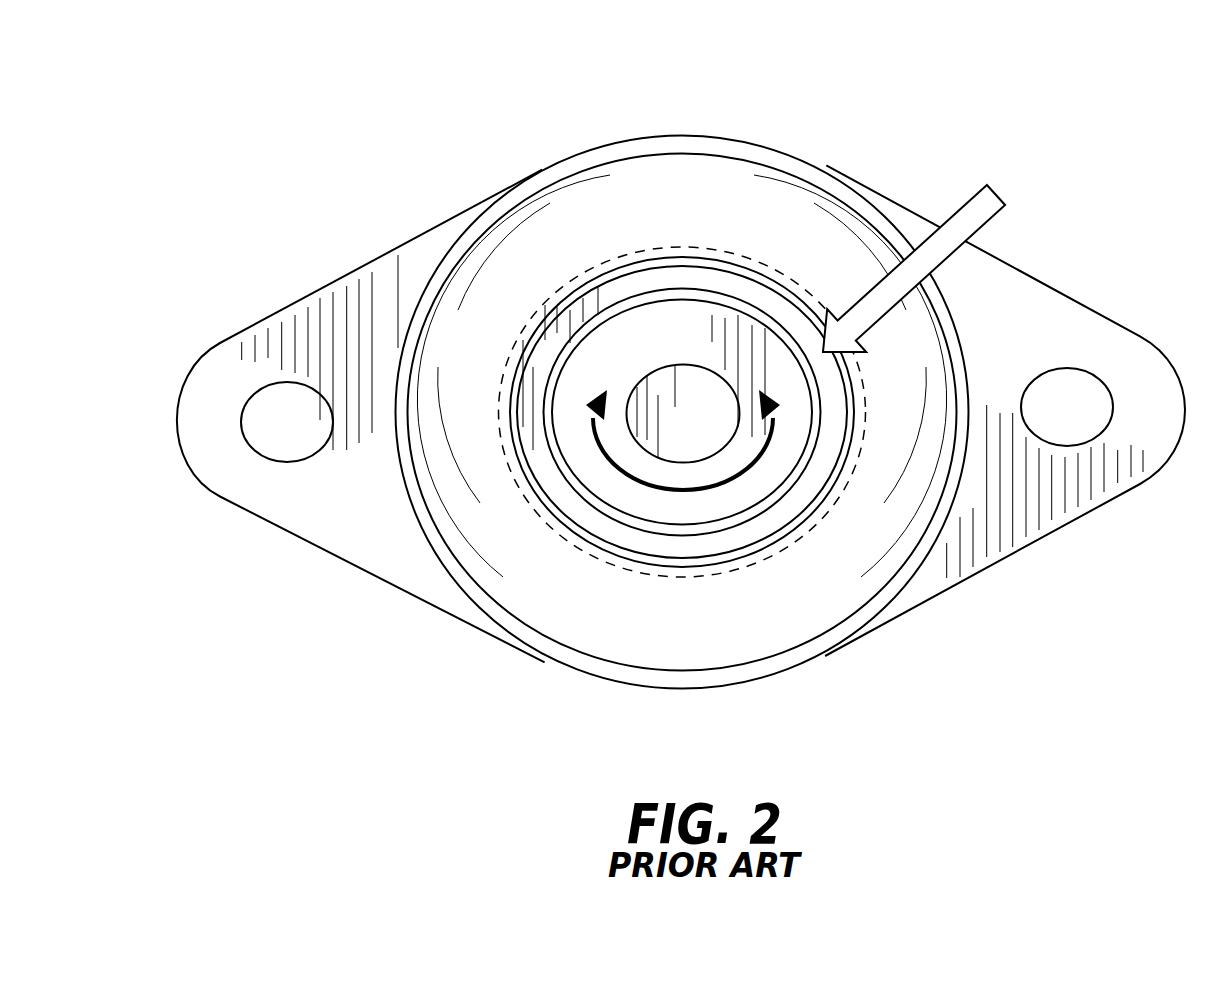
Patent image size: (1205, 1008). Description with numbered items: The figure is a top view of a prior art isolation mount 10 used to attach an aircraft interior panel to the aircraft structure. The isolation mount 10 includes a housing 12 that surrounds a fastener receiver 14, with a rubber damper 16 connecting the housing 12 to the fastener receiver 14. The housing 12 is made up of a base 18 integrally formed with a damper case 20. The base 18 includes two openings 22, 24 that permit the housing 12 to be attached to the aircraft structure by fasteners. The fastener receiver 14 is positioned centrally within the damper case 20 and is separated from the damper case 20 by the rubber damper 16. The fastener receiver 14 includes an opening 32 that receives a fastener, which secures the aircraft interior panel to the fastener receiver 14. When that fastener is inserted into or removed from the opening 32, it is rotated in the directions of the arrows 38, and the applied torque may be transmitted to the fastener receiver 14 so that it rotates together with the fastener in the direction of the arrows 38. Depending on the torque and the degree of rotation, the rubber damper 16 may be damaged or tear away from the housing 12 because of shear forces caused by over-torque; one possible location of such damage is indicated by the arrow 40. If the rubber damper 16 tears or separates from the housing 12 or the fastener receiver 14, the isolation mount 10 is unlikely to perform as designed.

The isolation mount 10 is at (652, 364).
The housing 12 is at (1068, 232).
The fastener receiver 14 is at (723, 513).
The rubber damper 16 is at (655, 273).
The base 18 is at (1031, 533).
The damper case 20 is at (687, 168).
The opening 22 is at (263, 432).
The opening 24 is at (1060, 390).
The opening 32 is at (707, 373).
The arrows 38 is at (612, 475).
The arrow 40 is at (1000, 188).